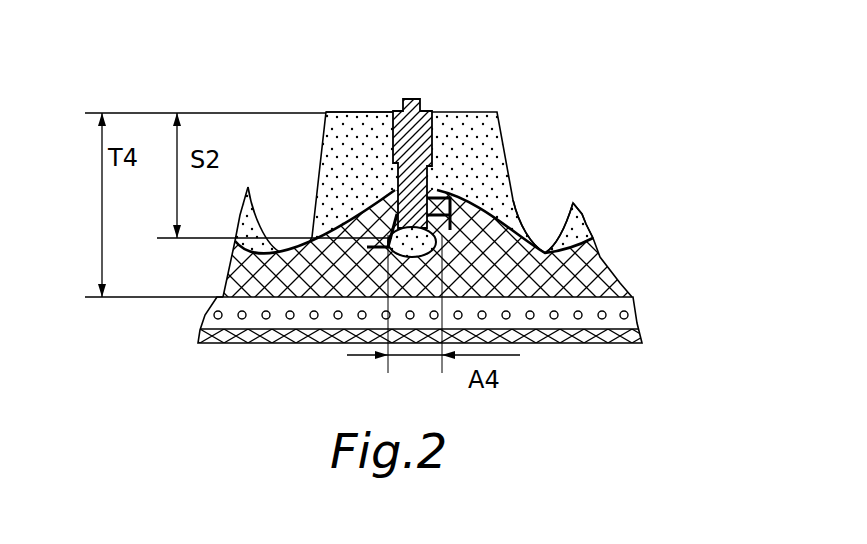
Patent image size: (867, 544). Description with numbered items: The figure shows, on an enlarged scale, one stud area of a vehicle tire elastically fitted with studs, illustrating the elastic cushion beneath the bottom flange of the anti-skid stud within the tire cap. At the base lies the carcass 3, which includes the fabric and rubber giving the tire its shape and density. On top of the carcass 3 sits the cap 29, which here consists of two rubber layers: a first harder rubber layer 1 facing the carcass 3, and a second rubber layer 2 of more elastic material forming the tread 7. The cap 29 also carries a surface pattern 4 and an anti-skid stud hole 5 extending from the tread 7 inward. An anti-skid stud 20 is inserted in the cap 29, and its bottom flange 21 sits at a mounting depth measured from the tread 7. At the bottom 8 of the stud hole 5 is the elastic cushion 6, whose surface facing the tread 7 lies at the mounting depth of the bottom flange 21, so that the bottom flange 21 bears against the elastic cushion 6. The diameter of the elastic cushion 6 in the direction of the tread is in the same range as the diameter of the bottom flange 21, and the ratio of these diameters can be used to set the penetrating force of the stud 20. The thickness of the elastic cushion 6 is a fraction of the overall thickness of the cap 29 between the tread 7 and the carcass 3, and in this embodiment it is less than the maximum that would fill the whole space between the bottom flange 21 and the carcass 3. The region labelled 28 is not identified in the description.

The first harder rubber layer 1 is at (592, 281).
The second rubber layer 2 is at (487, 112).
The carcass 3 is at (617, 305).
The surface pattern 4 is at (556, 230).
The anti-skid stud hole 5 is at (445, 196).
The elastic cushion 6 is at (452, 205).
The tread 7 is at (362, 100).
The bottom of stud hole 8 is at (372, 249).
The anti-skid stud 20 is at (428, 110).
The bottom flange 21 is at (368, 198).
The side wall 28 is at (600, 252).
The cap 29 is at (612, 204).